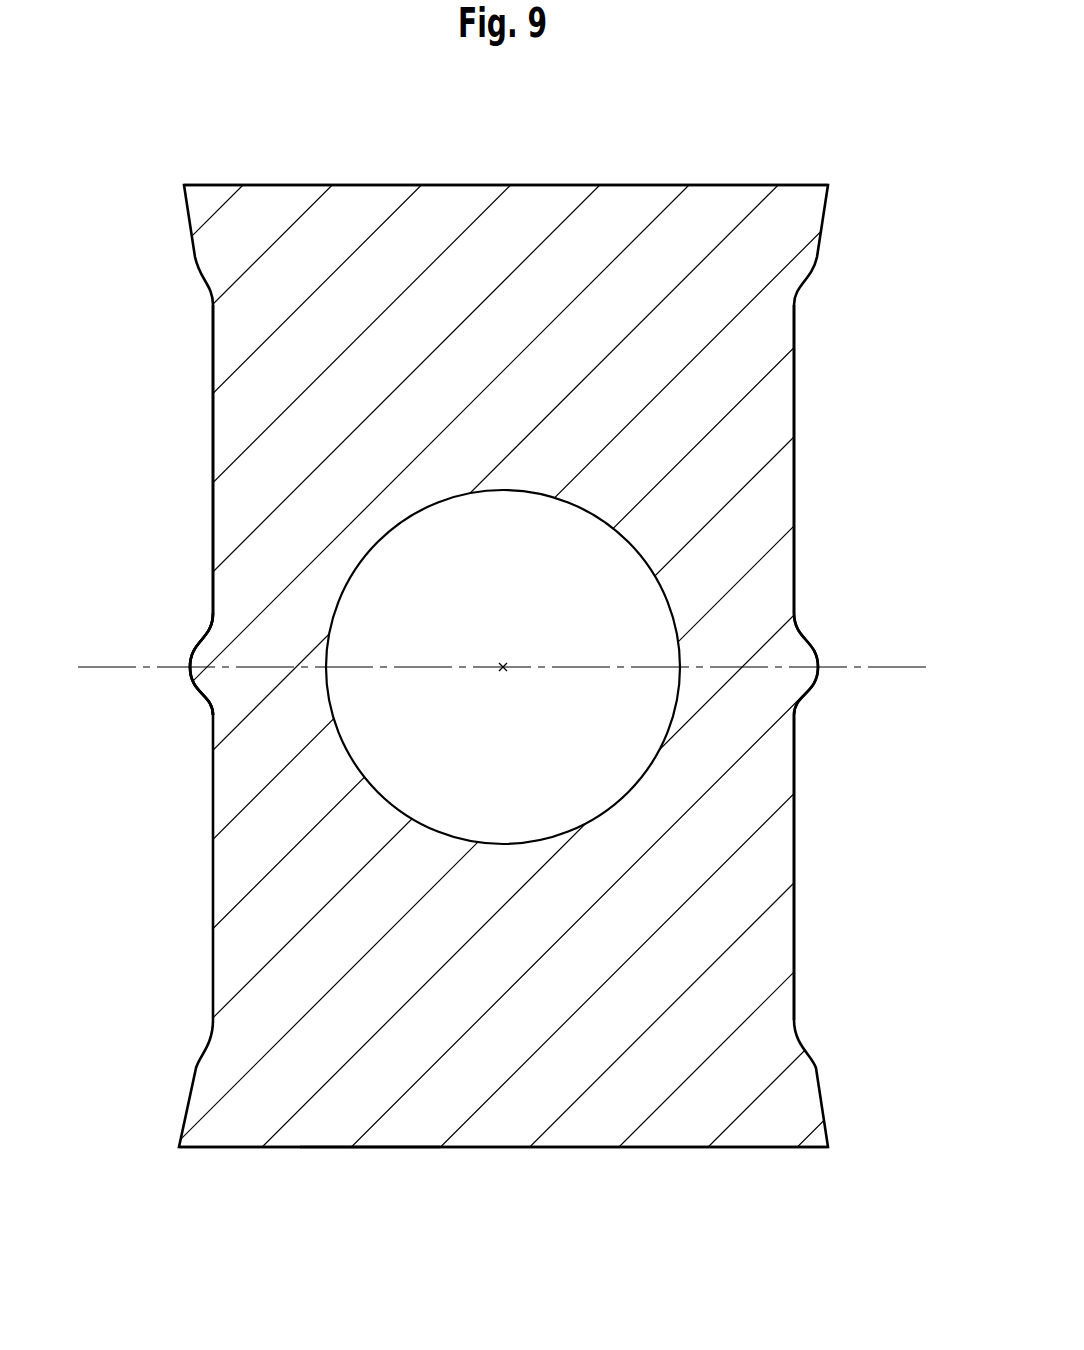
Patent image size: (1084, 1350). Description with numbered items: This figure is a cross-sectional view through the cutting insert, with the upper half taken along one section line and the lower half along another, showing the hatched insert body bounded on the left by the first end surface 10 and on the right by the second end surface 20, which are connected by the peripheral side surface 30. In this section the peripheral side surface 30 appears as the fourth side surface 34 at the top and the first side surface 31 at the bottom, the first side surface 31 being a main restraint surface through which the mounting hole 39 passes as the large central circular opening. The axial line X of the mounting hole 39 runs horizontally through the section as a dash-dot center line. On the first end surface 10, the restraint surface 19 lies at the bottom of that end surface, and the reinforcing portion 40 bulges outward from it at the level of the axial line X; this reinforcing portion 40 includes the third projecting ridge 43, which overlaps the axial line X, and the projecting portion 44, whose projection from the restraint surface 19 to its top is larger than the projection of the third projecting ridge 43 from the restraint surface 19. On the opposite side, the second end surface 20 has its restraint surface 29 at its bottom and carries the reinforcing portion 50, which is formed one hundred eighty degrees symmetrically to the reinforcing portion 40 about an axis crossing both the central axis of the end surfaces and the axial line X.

The first end surface 10 is at (204, 931).
The restraint surface 19 is at (213, 511).
The second end surface 20 is at (795, 362).
The restraint surface 29 is at (796, 813).
The peripheral side surface 30 is at (373, 1152).
The first side surface 31 is at (498, 1148).
The fourth side surface 34 is at (481, 185).
The mounting hole 39 is at (675, 730).
The reinforcing portion 40 is at (198, 718).
The third projecting ridge 43 is at (194, 689).
The projecting portion 44 is at (192, 655).
The reinforcing portion 50 is at (827, 647).
The axial line X is at (505, 664).